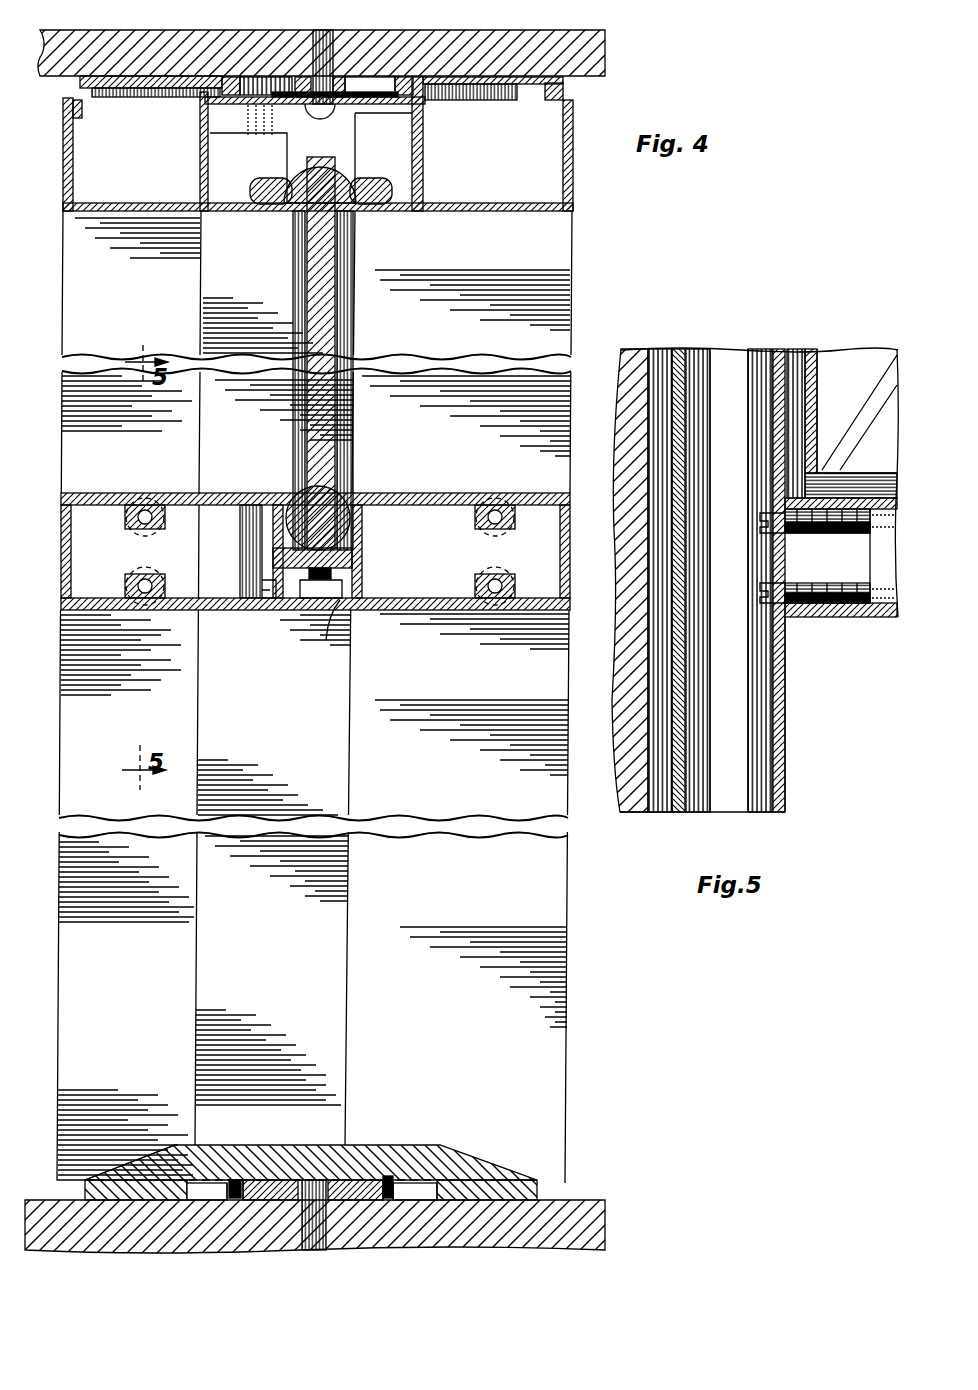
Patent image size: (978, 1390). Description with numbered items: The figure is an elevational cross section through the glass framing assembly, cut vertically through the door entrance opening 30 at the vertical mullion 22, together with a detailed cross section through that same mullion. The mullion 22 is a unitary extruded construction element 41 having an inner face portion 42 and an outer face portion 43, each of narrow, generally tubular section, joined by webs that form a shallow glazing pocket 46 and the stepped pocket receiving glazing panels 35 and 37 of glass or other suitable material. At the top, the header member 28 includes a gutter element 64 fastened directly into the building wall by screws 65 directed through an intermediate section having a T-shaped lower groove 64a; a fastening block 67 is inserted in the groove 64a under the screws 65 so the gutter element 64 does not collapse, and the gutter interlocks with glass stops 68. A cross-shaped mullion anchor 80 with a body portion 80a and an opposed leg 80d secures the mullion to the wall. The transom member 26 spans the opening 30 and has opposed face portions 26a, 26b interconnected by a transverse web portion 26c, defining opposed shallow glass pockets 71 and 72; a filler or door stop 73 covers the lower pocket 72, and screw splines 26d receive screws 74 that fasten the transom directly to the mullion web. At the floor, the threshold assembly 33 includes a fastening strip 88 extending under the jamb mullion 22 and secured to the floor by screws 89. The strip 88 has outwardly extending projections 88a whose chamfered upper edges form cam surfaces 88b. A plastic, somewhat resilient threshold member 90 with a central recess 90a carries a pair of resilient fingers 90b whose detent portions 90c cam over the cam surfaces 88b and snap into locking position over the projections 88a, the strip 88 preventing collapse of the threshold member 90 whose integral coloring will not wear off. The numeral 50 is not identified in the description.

In FIG. 4, the vertical mullion 22 is at (575, 282).
In FIG. 5, the vertical mullion 22 is at (740, 350).
In FIG. 4, the transom member 26 is at (61, 590).
In FIG. 5, the transom member 26 is at (850, 617).
In FIG. 4, the face portion 26a is at (61, 555).
In FIG. 4, the face portion 26b is at (570, 558).
In FIG. 4, the transverse web portion 26c is at (362, 555).
In FIG. 4, the screw splines 26d is at (150, 505).
In FIG. 5, the screw splines 26d is at (872, 585).
In FIG. 4, the header member 28 is at (603, 184).
In FIG. 4, the entrance opening 30 is at (583, 930).
In FIG. 5, the entrance opening 30 is at (828, 704).
In FIG. 4, the threshold assembly 33 is at (110, 1160).
In FIG. 5, the glazing panel 35 is at (620, 812).
In FIG. 4, the glazing panel 37 is at (333, 332).
In FIG. 5, the glazing panel 37 is at (865, 365).
In FIG. 4, the extruded construction element 41 is at (95, 330).
In FIG. 5, the extruded construction element 41 is at (780, 752).
In FIG. 4, the inner face portion 42 is at (572, 330).
In FIG. 4, the outer face portion 43 is at (68, 410).
In FIG. 4, the shallow glazing pocket 46 is at (345, 158).
In FIG. 4, the panel core 50 is at (218, 290).
In FIG. 4, the gutter element 64 is at (578, 122).
In FIG. 4, the T-shaped lower groove 64a is at (395, 76).
In FIG. 4, the screws 65 is at (330, 30).
In FIG. 4, the fastening block 67 is at (340, 96).
In FIG. 4, the glass stops 68 is at (64, 152).
In FIG. 4, the shallow glass pocket 71 is at (340, 486).
In FIG. 4, the shallow glass pocket 72 is at (343, 600).
In FIG. 4, the filler 73 is at (318, 612).
In FIG. 4, the screws 74 is at (130, 540).
In FIG. 5, the screws 74 is at (785, 592).
In FIG. 4, the mullion anchor 80 is at (155, 97).
In FIG. 4, the body portion 80a is at (462, 100).
In FIG. 4, the leg 80d is at (268, 76).
In FIG. 4, the fastening strip 88 is at (272, 1200).
In FIG. 4, the projections 88a is at (230, 1200).
In FIG. 4, the cam surfaces 88b is at (240, 1178).
In FIG. 4, the screws 89 is at (322, 1240).
In FIG. 4, the threshold member 90 is at (512, 1172).
In FIG. 4, the central recess 90a is at (190, 1222).
In FIG. 4, the resilient fingers 90b is at (220, 1176).
In FIG. 4, the detent portions 90c is at (242, 1200).